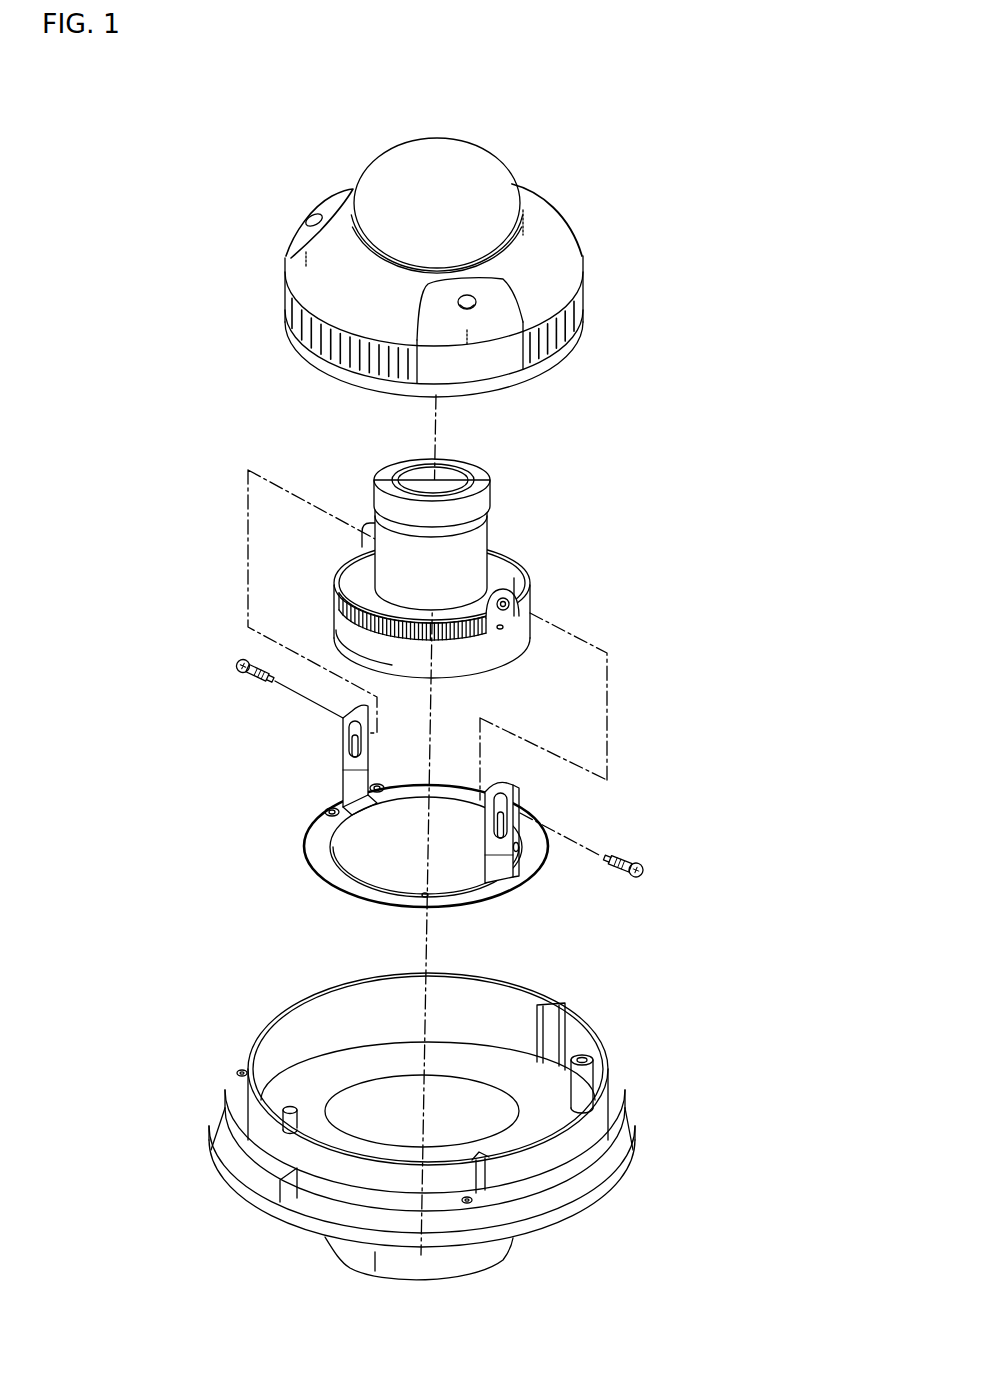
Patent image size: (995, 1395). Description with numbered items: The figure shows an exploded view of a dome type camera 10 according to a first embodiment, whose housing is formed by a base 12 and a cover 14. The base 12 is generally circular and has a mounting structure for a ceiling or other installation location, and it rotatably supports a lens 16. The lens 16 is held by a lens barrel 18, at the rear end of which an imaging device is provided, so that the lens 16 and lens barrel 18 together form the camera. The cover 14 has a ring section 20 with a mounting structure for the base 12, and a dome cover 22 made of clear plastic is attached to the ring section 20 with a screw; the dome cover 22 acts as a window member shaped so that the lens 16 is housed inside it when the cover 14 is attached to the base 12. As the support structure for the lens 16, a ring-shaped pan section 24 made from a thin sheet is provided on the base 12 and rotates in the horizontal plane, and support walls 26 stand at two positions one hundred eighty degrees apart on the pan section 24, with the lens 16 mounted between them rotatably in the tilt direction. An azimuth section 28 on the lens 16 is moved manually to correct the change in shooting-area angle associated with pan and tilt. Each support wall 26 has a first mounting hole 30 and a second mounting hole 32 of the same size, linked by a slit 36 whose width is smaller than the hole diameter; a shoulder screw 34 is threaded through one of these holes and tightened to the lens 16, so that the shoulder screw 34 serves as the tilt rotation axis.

The dome type camera 10 is at (193, 226).
The base 12 is at (617, 1048).
The cover 14 is at (632, 249).
The lens 16 is at (507, 493).
The lens barrel 18 is at (472, 565).
The ring section 20 is at (550, 227).
The dome cover 22 is at (475, 168).
The pan section 24 is at (355, 885).
The support walls 26 is at (342, 783).
The azimuth section 28 is at (337, 586).
The first mounting hole 30 is at (345, 772).
The second mounting hole 32 is at (343, 722).
The shoulder screw 34 is at (240, 672).
The slit 36 is at (340, 742).